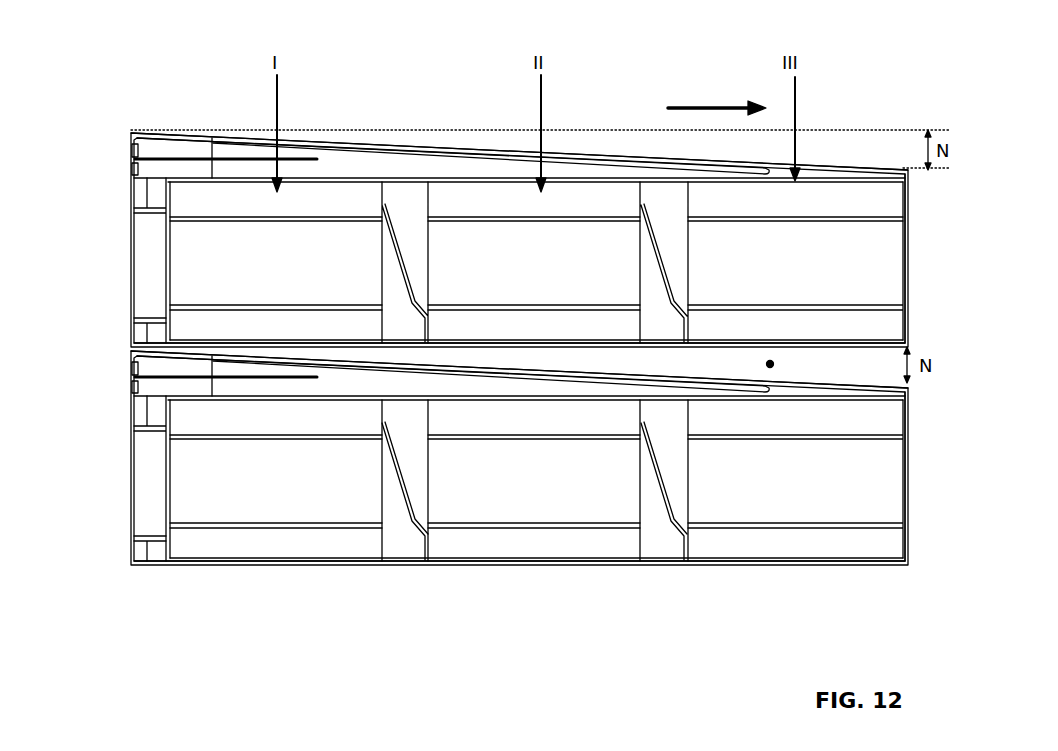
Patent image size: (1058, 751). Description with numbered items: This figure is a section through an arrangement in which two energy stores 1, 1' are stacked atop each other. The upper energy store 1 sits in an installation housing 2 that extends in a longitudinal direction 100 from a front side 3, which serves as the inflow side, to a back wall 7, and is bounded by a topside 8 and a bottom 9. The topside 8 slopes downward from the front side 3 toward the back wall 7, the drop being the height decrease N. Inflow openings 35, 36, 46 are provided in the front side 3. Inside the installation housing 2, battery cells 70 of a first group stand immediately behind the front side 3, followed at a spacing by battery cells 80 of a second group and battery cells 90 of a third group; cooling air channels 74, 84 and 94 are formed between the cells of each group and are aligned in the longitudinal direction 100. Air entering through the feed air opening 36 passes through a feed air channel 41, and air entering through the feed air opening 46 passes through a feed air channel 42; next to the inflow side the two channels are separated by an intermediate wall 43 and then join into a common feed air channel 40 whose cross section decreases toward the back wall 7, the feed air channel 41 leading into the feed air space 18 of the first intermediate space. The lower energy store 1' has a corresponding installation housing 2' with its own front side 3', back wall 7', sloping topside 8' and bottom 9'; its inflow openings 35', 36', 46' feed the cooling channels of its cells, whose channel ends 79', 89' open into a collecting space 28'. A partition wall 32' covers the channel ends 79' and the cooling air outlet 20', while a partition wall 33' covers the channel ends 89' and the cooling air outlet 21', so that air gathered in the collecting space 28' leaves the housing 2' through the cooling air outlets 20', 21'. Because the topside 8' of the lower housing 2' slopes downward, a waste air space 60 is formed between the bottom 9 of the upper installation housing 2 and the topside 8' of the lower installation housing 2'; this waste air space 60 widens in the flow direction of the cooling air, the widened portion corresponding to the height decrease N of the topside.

The energy store 1 is at (82, 72).
The further energy store 1' is at (75, 646).
The installation housing 2 is at (543, 238).
The installation housing of the further energy store 2' is at (546, 458).
The front side 3 is at (114, 329).
The base / support of second module 3' is at (113, 545).
The back wall 7 is at (930, 258).
The rear wall of second module 7' is at (933, 476).
The topside 8 is at (519, 120).
The topside of the further installation housing 8' is at (544, 385).
The bottom 9 is at (545, 324).
The bottom wall of second module 9' is at (547, 585).
The feed air space 18 is at (405, 210).
The first partition element 20' is at (395, 518).
The second partition element 21' is at (662, 518).
The flap 28' is at (501, 529).
The flap surface 32' is at (410, 529).
The flap surface 33' is at (672, 529).
The inflow opening 35 is at (114, 260).
The front wall of second module 35' is at (113, 478).
The feed air opening 36 is at (98, 181).
The lower inlet of second module 36' is at (97, 396).
The common feed air channel 40 is at (472, 160).
The feed air channel 41 is at (165, 167).
The feed air channel 42 is at (190, 150).
The intermediate wall 43 is at (220, 153).
The inflow opening 46 is at (97, 136).
The upper inlet of second module 46' is at (186, 374).
The waste air space 60 is at (770, 364).
The battery cells 70 is at (308, 193).
The cooling air channel 74 is at (238, 247).
The partition wall edge 79' is at (327, 518).
The battery cells 80 is at (567, 188).
The cooling channel 84 is at (492, 248).
The partition wall edge 89' is at (600, 518).
The battery cells 90 is at (822, 185).
The cooling channel 94 is at (853, 248).
The longitudinal direction 100 is at (700, 105).